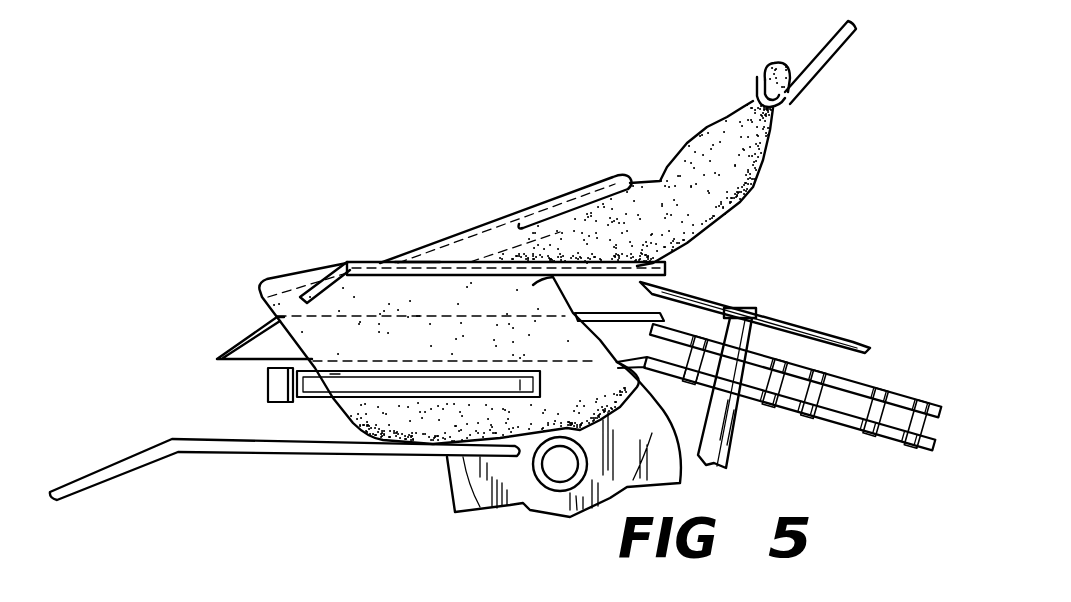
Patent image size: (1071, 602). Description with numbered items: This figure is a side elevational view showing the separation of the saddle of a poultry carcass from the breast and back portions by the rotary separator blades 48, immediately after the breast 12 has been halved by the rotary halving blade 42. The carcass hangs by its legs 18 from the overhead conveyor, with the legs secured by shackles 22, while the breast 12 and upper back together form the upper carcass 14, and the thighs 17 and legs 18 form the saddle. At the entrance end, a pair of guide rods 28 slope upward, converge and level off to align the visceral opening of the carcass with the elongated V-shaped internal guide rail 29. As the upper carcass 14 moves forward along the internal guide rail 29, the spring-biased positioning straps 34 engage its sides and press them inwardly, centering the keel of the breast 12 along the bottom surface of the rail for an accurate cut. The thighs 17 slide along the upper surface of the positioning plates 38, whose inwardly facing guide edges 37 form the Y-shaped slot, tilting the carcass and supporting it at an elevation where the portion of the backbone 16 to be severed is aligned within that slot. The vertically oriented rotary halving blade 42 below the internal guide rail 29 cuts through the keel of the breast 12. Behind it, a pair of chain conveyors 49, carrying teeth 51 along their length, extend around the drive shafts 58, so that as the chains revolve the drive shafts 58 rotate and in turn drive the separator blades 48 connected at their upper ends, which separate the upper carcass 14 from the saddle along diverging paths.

The breast 12 is at (432, 415).
The upper carcass portion 14 is at (413, 292).
The backbone 16 is at (482, 244).
The thigh 17 is at (573, 224).
The leg 18 is at (723, 137).
The shackle 22 is at (851, 46).
The guide rod 28 is at (130, 462).
The internal guide rail 29 is at (250, 332).
The positioning strap 34 is at (268, 386).
The guide edge 37 is at (395, 255).
The positioning plate 38 is at (326, 280).
The rotary halving blade 42 is at (530, 505).
The rotary separator blade 48 is at (846, 301).
The chain conveyor 49 is at (847, 423).
The tooth 51 is at (906, 398).
The drive shaft 58 is at (740, 310).